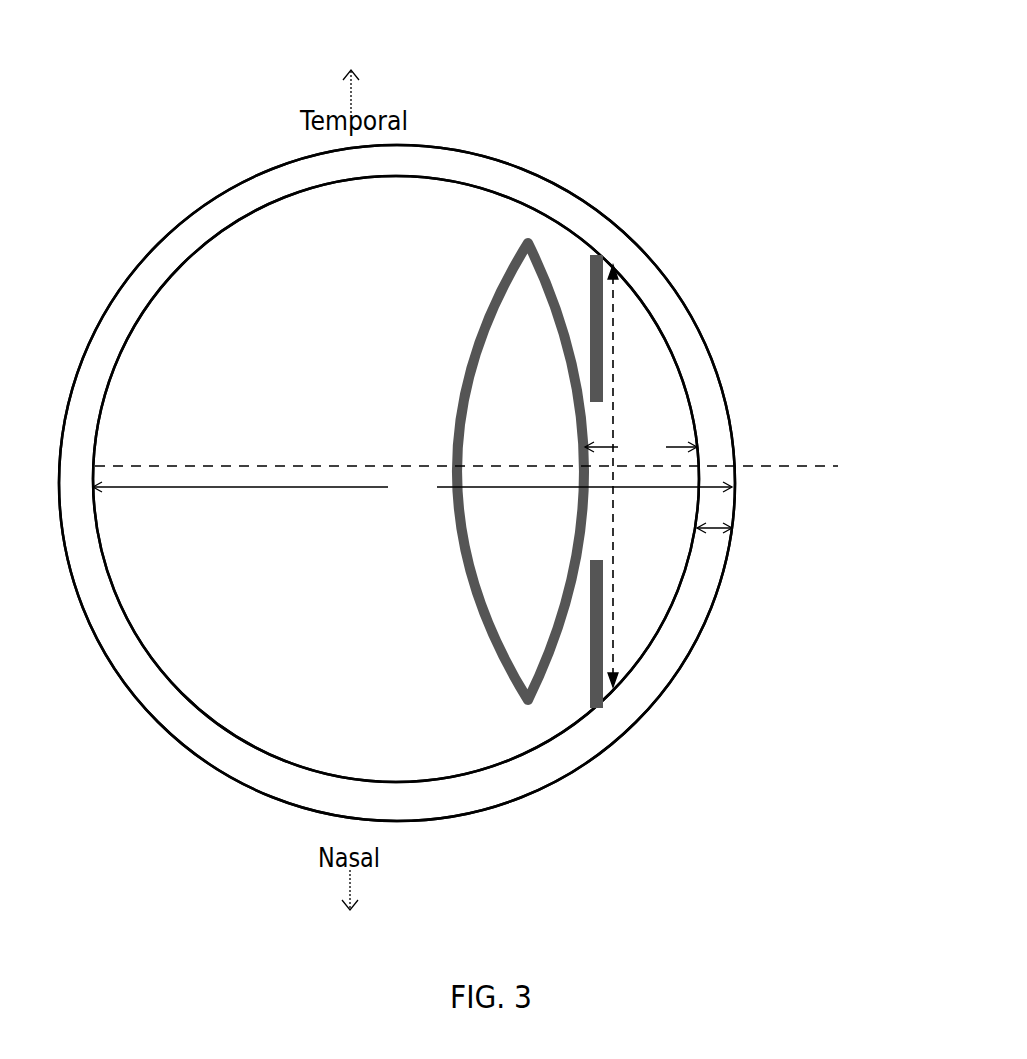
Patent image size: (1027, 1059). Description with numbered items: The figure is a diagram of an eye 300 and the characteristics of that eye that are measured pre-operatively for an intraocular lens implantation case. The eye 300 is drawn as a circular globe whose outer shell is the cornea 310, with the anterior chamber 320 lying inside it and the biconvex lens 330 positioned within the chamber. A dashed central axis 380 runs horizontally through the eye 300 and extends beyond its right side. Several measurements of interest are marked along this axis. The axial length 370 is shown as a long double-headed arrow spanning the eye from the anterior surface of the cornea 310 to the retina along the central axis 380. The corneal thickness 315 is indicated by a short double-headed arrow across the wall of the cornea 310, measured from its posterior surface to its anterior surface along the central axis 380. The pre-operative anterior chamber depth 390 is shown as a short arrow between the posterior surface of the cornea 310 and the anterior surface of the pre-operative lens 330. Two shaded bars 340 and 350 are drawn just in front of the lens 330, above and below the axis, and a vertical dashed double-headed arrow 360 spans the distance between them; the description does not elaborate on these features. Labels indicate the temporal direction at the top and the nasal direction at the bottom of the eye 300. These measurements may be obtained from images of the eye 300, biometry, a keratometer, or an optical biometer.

The eye 300 is at (102, 88).
The cornea 310 is at (717, 448).
The corneal thickness 315 is at (727, 532).
The anterior chamber 320 is at (668, 398).
The lens 330 is at (543, 265).
The lower segment 340 is at (607, 695).
The upper segment 350 is at (610, 265).
The vertical distance 360 is at (613, 603).
The axial length 370 is at (412, 486).
The central axis 380 is at (798, 467).
The anterior chamber depth 390 is at (641, 446).